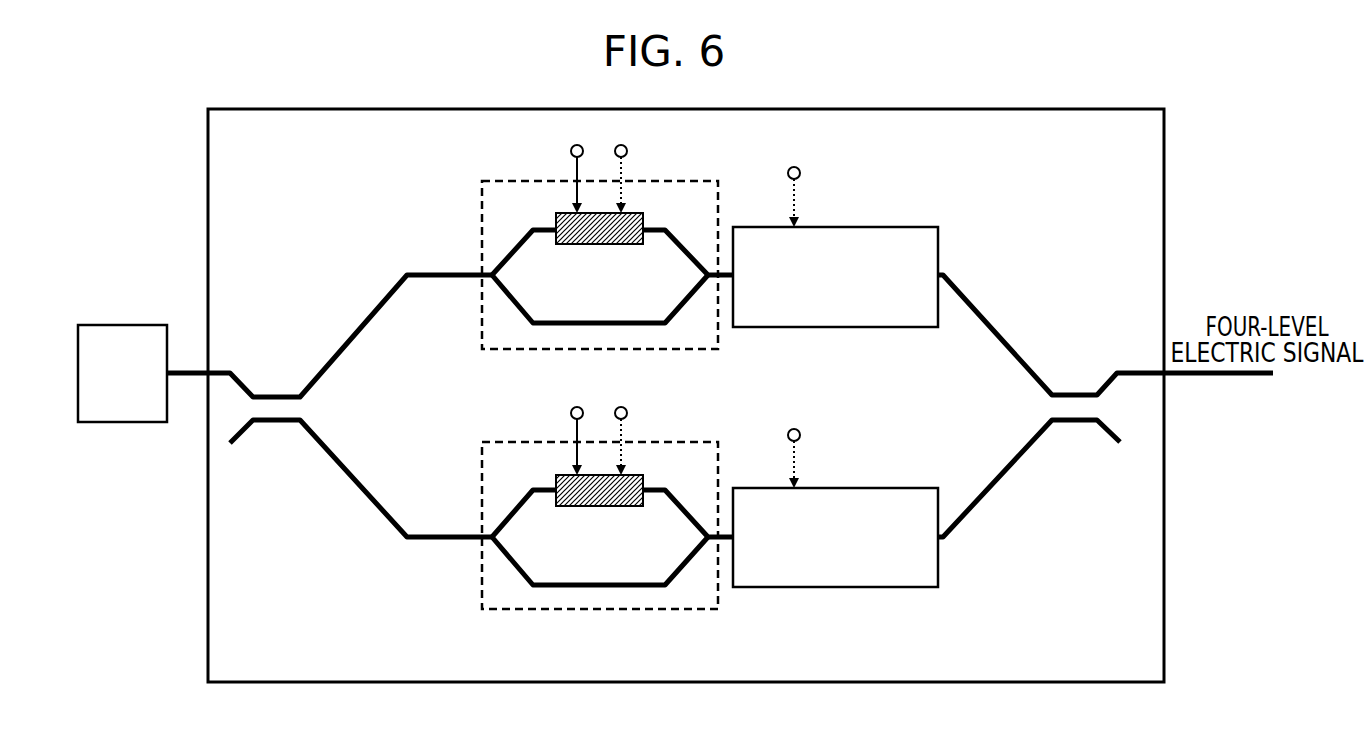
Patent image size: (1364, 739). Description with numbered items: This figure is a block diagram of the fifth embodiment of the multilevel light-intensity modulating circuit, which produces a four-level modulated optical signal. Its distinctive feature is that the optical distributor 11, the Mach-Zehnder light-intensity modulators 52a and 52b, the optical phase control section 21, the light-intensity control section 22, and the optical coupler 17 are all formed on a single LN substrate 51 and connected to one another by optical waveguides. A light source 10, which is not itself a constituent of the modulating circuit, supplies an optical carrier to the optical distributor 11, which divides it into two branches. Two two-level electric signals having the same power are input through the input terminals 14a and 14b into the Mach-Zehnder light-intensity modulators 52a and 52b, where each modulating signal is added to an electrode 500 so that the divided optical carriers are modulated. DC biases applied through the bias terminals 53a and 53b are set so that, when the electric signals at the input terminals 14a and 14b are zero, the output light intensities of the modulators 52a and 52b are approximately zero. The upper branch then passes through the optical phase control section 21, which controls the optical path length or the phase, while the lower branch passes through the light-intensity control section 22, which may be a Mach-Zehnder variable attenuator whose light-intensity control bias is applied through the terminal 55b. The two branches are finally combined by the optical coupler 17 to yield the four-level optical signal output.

The LN substrate 51 is at (278, 110).
The light source 10 is at (118, 325).
The optical distributor 11 is at (277, 373).
The Mach-Zehnder light-intensity modulator 52a is at (508, 349).
The Mach-Zehnder light-intensity modulator 52b is at (508, 609).
The electrode 500 is at (640, 213).
The input terminal 14a is at (579, 166).
The input terminal 14b is at (552, 437).
The bias terminal 53a is at (628, 148).
The bias terminal 53b is at (628, 410).
The optical phase control section 21 is at (813, 327).
The light-intensity control section 22 is at (813, 587).
The terminal 55b is at (798, 312).
The optical coupler 17 is at (1075, 372).